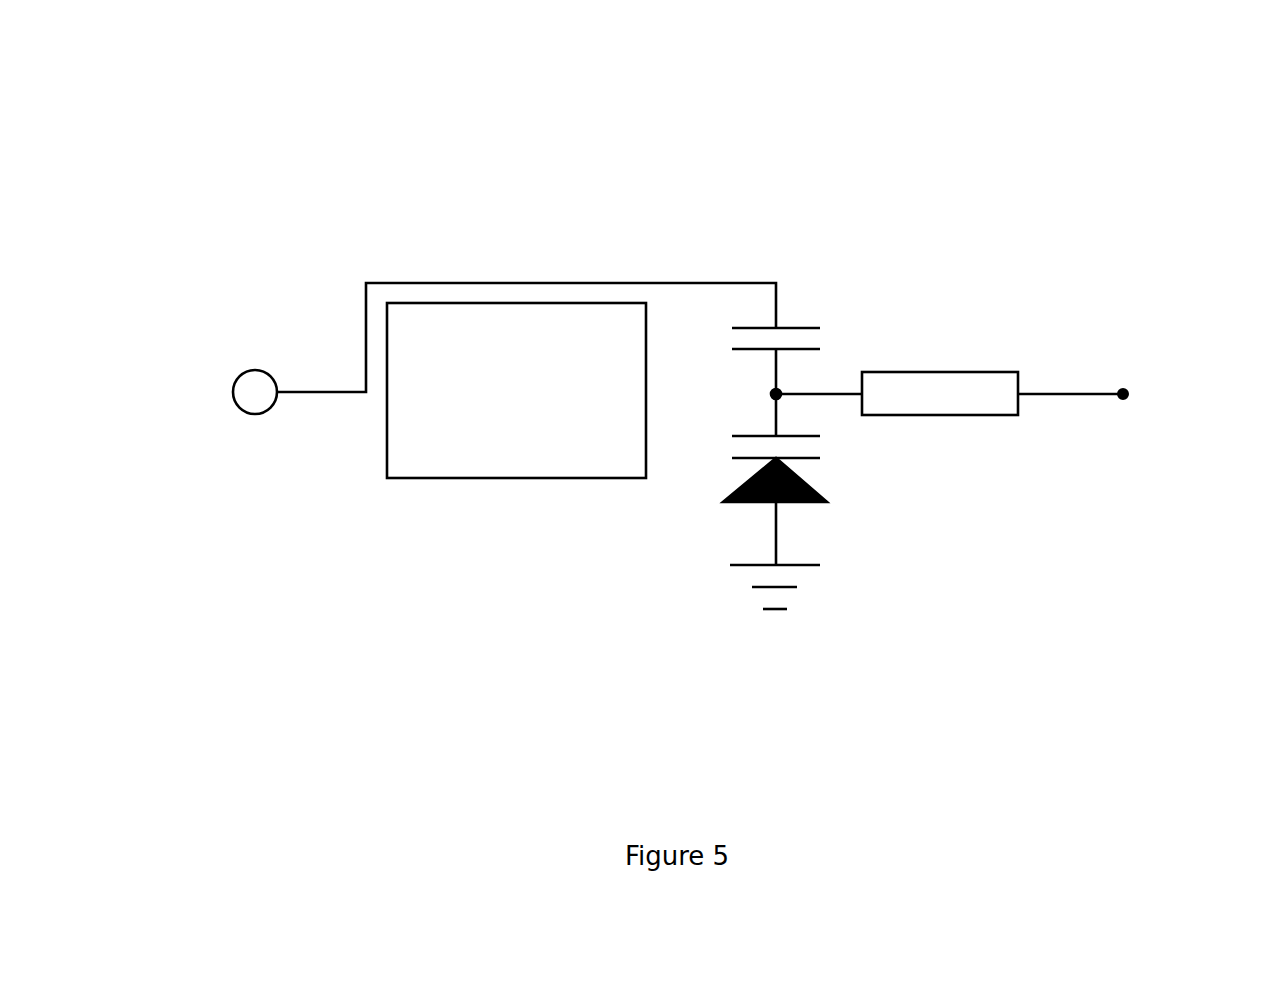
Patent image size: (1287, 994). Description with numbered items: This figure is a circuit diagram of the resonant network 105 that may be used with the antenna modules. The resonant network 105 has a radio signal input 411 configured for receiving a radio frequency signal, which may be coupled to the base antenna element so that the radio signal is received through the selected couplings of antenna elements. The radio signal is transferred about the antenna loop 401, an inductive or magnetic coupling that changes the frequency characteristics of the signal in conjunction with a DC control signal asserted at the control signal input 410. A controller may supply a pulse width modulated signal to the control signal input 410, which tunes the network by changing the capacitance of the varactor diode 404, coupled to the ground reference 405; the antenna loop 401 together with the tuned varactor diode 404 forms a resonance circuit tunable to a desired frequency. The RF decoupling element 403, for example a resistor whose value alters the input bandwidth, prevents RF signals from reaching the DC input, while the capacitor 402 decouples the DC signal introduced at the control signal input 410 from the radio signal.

The resonant network 105 is at (1090, 197).
The antenna loop 401 is at (516, 390).
The capacitor 402 is at (820, 327).
The RF decoupling element 403 is at (987, 370).
The varactor diode 404 is at (827, 505).
The ground reference 405 is at (787, 612).
The control signal input 410 is at (1123, 390).
The radio signal input 411 is at (265, 368).